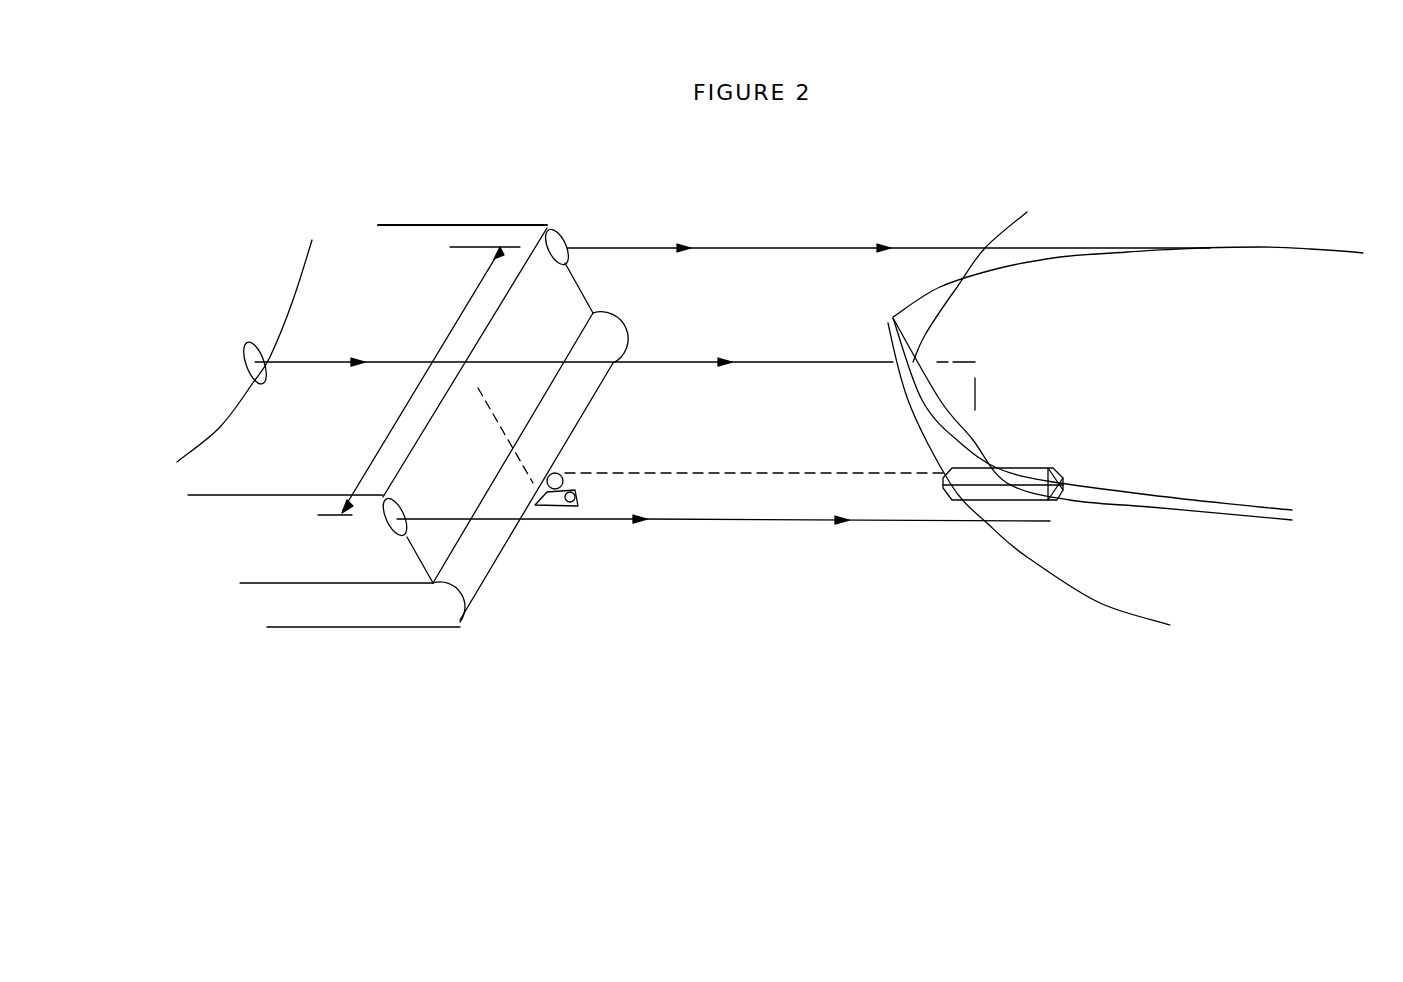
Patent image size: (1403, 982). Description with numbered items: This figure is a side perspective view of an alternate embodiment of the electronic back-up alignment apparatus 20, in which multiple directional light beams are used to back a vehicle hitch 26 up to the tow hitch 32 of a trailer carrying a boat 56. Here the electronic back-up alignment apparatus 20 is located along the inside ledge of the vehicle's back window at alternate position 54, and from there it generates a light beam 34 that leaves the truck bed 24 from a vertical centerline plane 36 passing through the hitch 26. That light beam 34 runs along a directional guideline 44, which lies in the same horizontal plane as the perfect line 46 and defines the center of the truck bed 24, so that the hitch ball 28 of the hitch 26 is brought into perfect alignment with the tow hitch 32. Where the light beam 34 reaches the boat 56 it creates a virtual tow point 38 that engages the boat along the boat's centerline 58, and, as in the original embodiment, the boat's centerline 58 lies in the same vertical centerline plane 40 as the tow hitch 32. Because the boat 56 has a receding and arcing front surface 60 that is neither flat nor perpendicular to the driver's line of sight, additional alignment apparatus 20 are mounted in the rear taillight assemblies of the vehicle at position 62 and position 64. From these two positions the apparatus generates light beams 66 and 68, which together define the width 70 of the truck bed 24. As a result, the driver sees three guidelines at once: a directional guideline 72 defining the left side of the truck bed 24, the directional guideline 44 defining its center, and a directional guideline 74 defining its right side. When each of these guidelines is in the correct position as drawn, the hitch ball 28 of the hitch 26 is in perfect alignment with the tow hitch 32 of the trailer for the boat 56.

The electronic back-up alignment apparatus 20 is at (253, 343).
The truck bed 24 is at (415, 615).
The hitch 26 is at (547, 505).
The hitch ball 28 is at (557, 505).
The tow hitch 32 is at (1063, 478).
The light beam 34 is at (793, 362).
The vertical centerline plane 36 is at (495, 418).
The virtual tow point 38 is at (988, 270).
The vertical centerline plane 40 is at (975, 400).
The directional guideline 44 is at (652, 362).
The perfect line 46 is at (753, 473).
The alternate position 54 is at (228, 373).
The boat 56 is at (1263, 258).
The boat's centerline 58 is at (913, 423).
The receding and arcing front surface 60 is at (1050, 537).
The position 62 is at (390, 540).
The position 64 is at (570, 230).
The light beam 66 is at (800, 520).
The light beam 68 is at (852, 248).
The width 70 is at (363, 472).
The directional guideline 72 is at (672, 520).
The directional guideline 74 is at (733, 248).